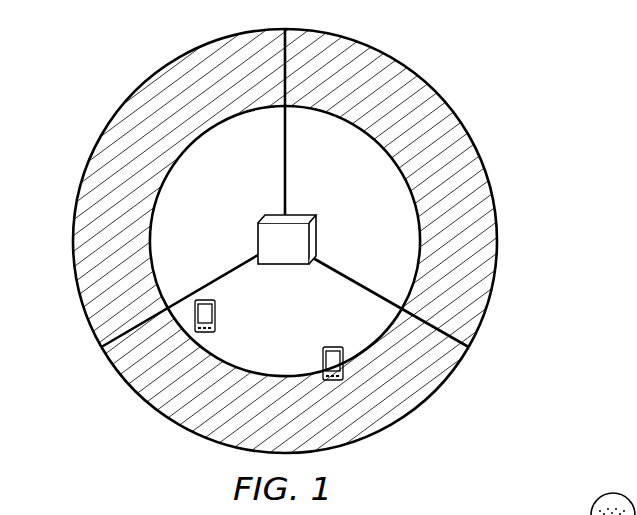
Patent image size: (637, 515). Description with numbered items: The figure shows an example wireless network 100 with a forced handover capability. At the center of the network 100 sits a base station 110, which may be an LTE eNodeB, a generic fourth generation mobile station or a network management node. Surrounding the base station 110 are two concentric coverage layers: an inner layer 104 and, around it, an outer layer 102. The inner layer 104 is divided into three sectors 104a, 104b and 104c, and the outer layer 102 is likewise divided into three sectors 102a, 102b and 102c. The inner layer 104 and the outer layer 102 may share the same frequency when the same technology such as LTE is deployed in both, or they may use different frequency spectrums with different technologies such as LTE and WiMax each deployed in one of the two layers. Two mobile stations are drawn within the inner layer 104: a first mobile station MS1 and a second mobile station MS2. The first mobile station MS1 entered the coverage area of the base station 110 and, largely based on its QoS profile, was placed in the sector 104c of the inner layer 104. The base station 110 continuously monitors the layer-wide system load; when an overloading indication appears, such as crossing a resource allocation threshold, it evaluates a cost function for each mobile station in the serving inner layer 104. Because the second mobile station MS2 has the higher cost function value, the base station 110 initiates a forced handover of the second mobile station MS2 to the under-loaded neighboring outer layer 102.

The wireless network 100 is at (553, 78).
The outer layer 102 is at (318, 257).
The sector 102a is at (127, 148).
The sector 102b is at (448, 158).
The sector 102c is at (372, 410).
The inner layer 104 is at (284, 202).
The sector 104a is at (245, 212).
The sector 104b is at (390, 239).
The sector 104c is at (310, 313).
The base station 110 is at (302, 220).
The first mobile station MS1 is at (227, 327).
The second mobile station MS2 is at (311, 358).